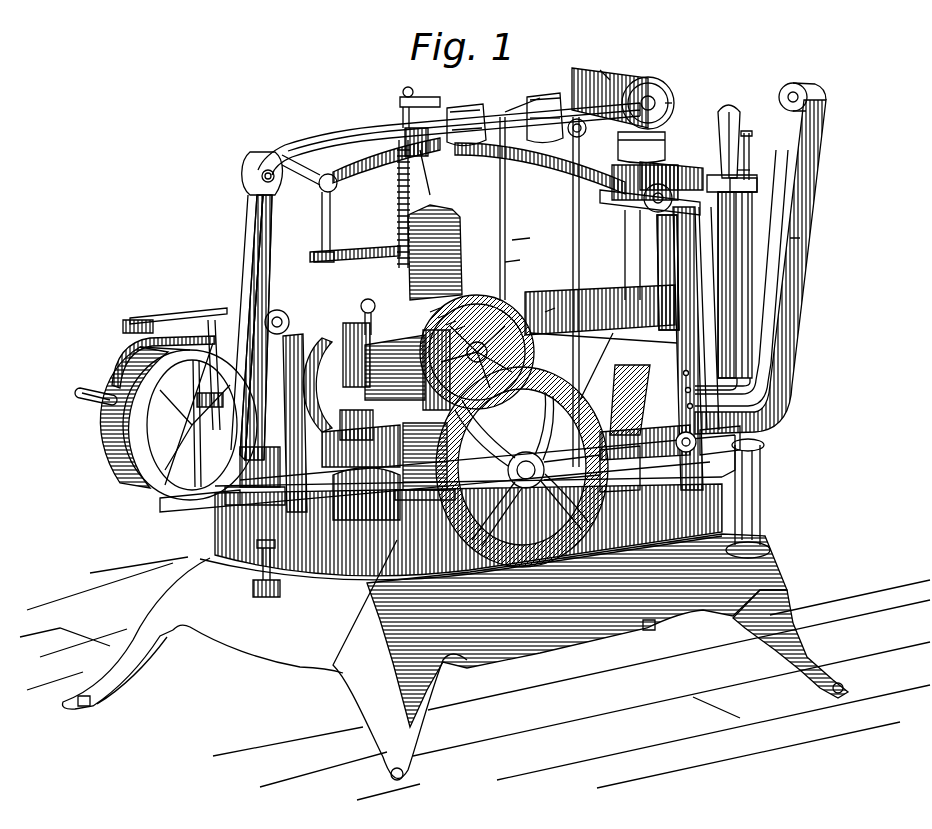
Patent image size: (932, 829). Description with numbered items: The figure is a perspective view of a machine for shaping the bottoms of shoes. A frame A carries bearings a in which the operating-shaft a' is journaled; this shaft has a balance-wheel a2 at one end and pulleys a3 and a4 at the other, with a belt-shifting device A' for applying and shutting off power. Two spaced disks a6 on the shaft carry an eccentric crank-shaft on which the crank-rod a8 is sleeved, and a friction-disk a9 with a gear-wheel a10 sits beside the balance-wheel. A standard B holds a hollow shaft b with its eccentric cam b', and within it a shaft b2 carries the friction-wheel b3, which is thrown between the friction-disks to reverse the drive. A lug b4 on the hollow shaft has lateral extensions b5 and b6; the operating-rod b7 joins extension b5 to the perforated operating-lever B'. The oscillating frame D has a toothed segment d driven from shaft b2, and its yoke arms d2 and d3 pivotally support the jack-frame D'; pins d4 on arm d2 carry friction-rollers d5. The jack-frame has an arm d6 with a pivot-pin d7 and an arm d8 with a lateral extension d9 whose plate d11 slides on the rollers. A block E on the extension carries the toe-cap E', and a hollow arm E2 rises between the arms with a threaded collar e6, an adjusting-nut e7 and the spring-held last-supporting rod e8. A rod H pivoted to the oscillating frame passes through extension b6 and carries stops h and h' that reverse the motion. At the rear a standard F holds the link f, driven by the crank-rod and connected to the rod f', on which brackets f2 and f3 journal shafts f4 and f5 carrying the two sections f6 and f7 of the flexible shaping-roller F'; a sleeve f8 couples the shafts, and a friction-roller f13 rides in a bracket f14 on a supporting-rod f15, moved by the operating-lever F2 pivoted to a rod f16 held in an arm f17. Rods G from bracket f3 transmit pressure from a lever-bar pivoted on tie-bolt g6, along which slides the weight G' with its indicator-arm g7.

The bearings a is at (393, 593).
The operating-shaft a' is at (487, 550).
The balance-wheel a2 is at (530, 565).
The pulley a3 is at (105, 470).
The pulley a4 is at (100, 412).
The disks a6 is at (390, 520).
The crank-rod a8 is at (235, 500).
The friction-disk a9 is at (333, 668).
The gear-wheel a10 is at (365, 690).
The frame A is at (200, 516).
The belt-shifting device A' is at (175, 305).
The hollow shaft or sleeve b is at (274, 342).
The eccentric cam b' is at (365, 475).
The shaft b2 is at (508, 312).
The friction-wheel b3 is at (446, 325).
The lug b4 is at (362, 312).
The lateral extension b5 is at (438, 318).
The lateral extension b6 is at (430, 312).
The operating-rod b7 is at (545, 312).
The standard B is at (364, 395).
The operating-lever B' is at (770, 318).
The toothed segment d is at (418, 240).
The arm d2 is at (640, 240).
The arm d3 is at (512, 262).
The pins d4 is at (625, 215).
The friction-rollers d5 is at (520, 240).
The arm d6 is at (779, 104).
The pivot-pin d7 is at (830, 100).
The arm d8 is at (690, 250).
The lateral extension d9 is at (672, 165).
The plate d11 is at (670, 188).
The oscillating frame D is at (589, 292).
The jack-frame D' is at (764, 278).
The threaded collar e6 is at (745, 190).
The adjusting-nut e7 is at (748, 170).
The last-supporting rod e8 is at (750, 150).
The block E is at (656, 154).
The toe-cap E' is at (664, 125).
The hollow arm E2 is at (735, 330).
The link f is at (245, 306).
The rod f' is at (469, 99).
The bracket f2 is at (457, 105).
The bracket f3 is at (572, 100).
The shaft f4 is at (540, 98).
The shaft f5 is at (505, 112).
The section of shaping-roller f6 is at (664, 82).
The section of shaping-roller f7 is at (608, 70).
The sleeve f8 is at (430, 195).
The friction-roller f13 is at (400, 103).
The bracket f14 is at (408, 97).
The supporting-rod f15 is at (320, 222).
The rod f16 is at (397, 212).
The arm f17 is at (314, 262).
The standard F is at (449, 197).
The flexible shaping-roller F' is at (623, 86).
The operating-lever F2 is at (505, 180).
The tie-bolt g6 is at (253, 583).
The indicator-arm g7 is at (655, 628).
The rods G is at (540, 166).
The weight G' is at (415, 167).
The stop h is at (355, 253).
The stop h' is at (478, 296).
The rod H is at (575, 400).